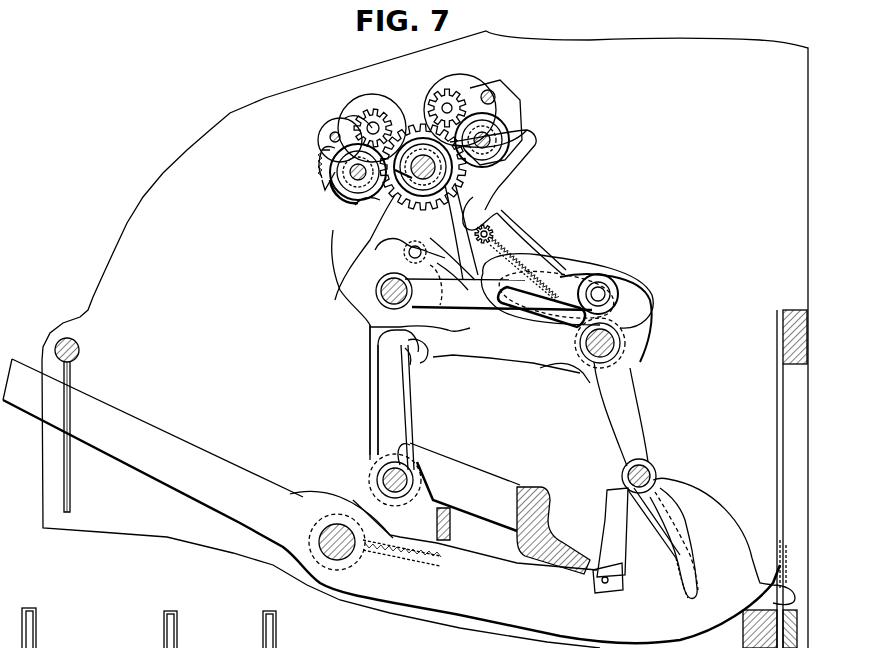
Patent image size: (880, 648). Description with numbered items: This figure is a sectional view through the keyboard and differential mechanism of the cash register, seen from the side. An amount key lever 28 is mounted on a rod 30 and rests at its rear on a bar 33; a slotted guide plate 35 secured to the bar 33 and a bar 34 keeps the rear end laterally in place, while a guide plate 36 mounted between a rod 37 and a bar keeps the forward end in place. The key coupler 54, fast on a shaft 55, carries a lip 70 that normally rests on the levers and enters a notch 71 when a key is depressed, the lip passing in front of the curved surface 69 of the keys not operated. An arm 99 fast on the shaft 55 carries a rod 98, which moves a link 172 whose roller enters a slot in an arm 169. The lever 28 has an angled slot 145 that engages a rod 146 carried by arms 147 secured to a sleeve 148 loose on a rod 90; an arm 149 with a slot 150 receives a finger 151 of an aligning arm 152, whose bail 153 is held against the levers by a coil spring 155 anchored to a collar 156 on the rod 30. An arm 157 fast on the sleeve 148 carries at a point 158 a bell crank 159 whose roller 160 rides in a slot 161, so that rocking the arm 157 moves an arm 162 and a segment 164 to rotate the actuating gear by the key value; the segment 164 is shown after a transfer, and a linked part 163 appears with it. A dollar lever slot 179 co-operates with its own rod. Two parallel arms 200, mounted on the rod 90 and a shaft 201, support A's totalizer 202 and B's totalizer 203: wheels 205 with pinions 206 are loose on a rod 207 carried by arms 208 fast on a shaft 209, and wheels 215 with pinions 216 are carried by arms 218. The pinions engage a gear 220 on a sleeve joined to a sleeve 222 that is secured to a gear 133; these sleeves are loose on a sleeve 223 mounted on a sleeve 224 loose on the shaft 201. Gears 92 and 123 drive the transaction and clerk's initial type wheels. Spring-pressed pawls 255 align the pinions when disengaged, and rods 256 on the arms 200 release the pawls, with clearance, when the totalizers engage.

The amount key lever 28 is at (152, 433).
The rod 30 is at (320, 538).
The bar 33 is at (743, 636).
The bar 34 is at (786, 310).
The guide plate 35 is at (777, 378).
The guide plate 36 is at (70, 485).
The rod 37 is at (72, 343).
The key coupler 54 is at (443, 455).
The shaft 55 is at (383, 478).
The curved surface 69 is at (607, 498).
The lip 70 is at (551, 548).
The notch 71 is at (608, 577).
The rod 90 is at (615, 348).
The gear 92 is at (36, 640).
The rod 98 is at (382, 293).
The arm 99 is at (372, 350).
The gear 123 is at (177, 640).
The gear 133 is at (276, 640).
The slot 145 is at (680, 508).
The rod 146 is at (650, 470).
The arm 147 is at (636, 403).
The sleeve 148 is at (585, 375).
The arm 149 is at (488, 367).
The slot 150 is at (432, 368).
The finger 151 is at (412, 368).
The aligning arm 152 is at (370, 393).
The bail 153 is at (450, 535).
The coil spring 155 is at (418, 558).
The collar 156 is at (345, 568).
The arm 157 is at (460, 310).
The pivot point 158 is at (392, 273).
The bell crank 159 is at (405, 250).
The roller 160 is at (495, 235).
The slot 161 is at (495, 205).
The arm 162 is at (530, 270).
The yoke 163 is at (586, 272).
The segment 164 is at (537, 146).
The arm 169 is at (655, 302).
The link 172 is at (370, 328).
The slot 179 is at (652, 520).
The arm 200 is at (527, 250).
The shaft 201 is at (420, 150).
The A's totalizer 202 is at (372, 88).
The B's totalizer 203 is at (488, 87).
The totalizer wheel 205 is at (363, 102).
The pinion 206 is at (380, 112).
The rod 207 is at (350, 118).
The arm 208 is at (323, 156).
The shaft 209 is at (342, 175).
The totalizer wheel 215 is at (468, 87).
The pinion 216 is at (447, 90).
The arm 218 is at (488, 125).
The gear 220 is at (461, 292).
The sleeve 222 is at (355, 186).
The sleeve 223 is at (412, 178).
The sleeve 224 is at (388, 195).
The aligning pawl 255 is at (320, 130).
The rod 256 is at (330, 138).